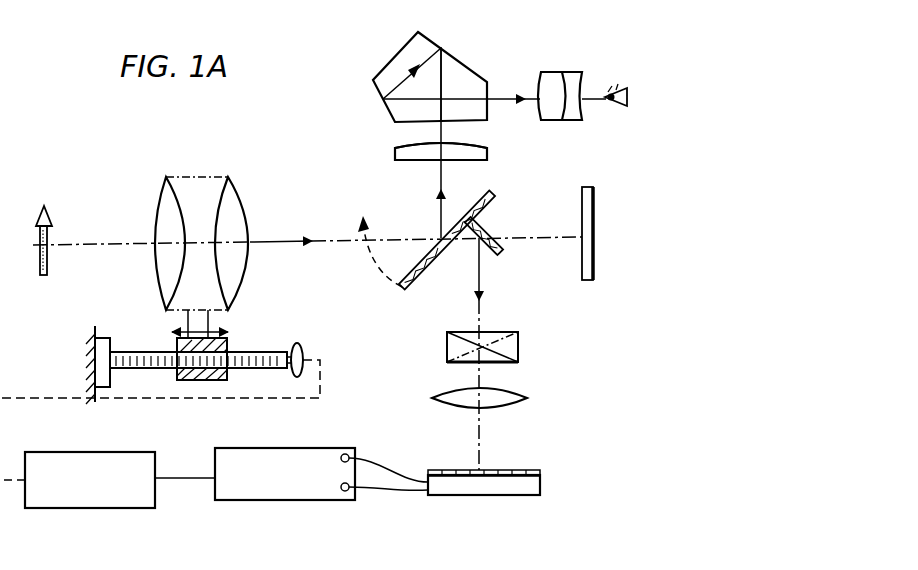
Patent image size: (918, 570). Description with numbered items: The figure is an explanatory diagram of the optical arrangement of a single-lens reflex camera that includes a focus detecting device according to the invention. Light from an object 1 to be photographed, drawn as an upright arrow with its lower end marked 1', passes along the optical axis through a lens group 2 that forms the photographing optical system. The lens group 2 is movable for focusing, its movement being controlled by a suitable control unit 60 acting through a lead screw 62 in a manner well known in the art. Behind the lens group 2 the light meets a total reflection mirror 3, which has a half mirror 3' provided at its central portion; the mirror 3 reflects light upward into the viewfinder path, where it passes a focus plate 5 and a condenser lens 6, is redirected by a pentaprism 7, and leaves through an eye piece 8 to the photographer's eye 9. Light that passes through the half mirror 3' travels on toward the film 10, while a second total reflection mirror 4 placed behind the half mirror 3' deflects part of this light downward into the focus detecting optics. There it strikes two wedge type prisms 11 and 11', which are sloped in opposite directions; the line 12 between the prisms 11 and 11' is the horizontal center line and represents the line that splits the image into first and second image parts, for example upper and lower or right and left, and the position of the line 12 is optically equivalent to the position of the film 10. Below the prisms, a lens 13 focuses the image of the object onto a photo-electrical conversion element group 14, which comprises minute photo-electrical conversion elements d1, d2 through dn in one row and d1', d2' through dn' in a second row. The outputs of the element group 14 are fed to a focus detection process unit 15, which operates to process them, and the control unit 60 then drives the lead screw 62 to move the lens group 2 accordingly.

The object 1 is at (59, 236).
The object image plane marker 1' is at (69, 272).
The lens group 2 is at (197, 178).
The total reflection mirror 3 is at (440, 256).
The half mirror 3' is at (456, 270).
The total reflection mirror 4 is at (500, 248).
The focus plate 5 is at (480, 160).
The condenser lens 6 is at (476, 142).
The pentaprism 7 is at (459, 62).
The eye piece 8 is at (551, 73).
The photographer's eye 9 is at (624, 88).
The film 10 is at (593, 203).
The wedge type prism 11 is at (509, 348).
The wedge type prism 11' is at (458, 347).
The line 12 is at (490, 338).
The lens 13 is at (512, 393).
The photo-electrical conversion element group 14 is at (517, 489).
The focus detection process unit 15 is at (242, 452).
The control unit 60 is at (88, 452).
The lead screw 62 is at (158, 350).
The photo-electrical conversion element d1 is at (419, 462).
The photo-electrical conversion element d1' is at (419, 447).
The photo-electrical conversion element d2 is at (459, 462).
The photo-electrical conversion element d2' is at (457, 446).
The photo-electrical conversion element dn is at (558, 462).
The photo-electrical conversion element dn' is at (541, 449).